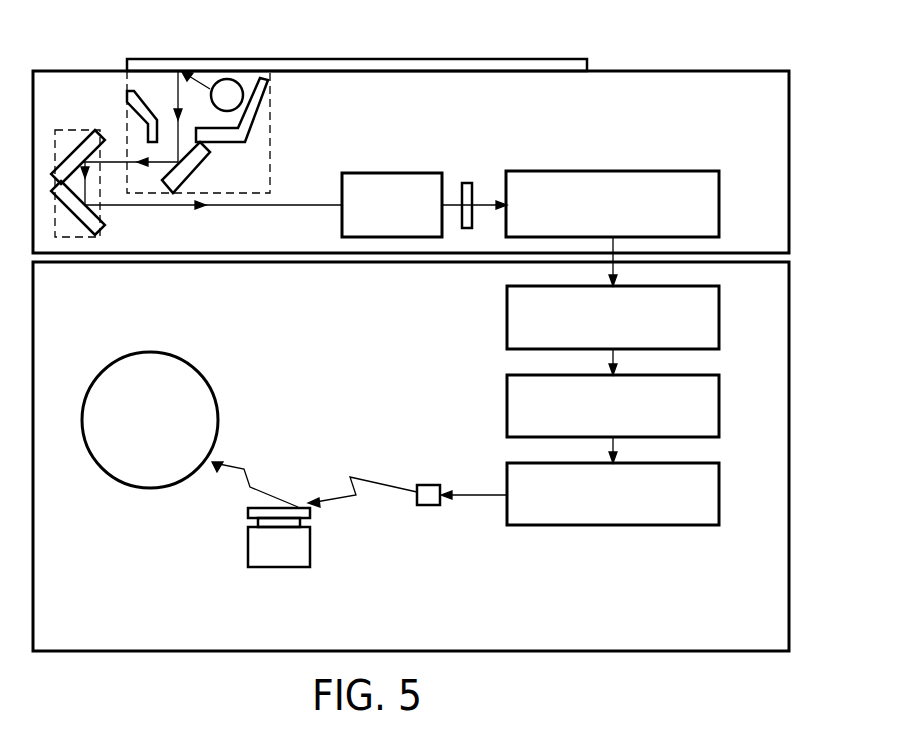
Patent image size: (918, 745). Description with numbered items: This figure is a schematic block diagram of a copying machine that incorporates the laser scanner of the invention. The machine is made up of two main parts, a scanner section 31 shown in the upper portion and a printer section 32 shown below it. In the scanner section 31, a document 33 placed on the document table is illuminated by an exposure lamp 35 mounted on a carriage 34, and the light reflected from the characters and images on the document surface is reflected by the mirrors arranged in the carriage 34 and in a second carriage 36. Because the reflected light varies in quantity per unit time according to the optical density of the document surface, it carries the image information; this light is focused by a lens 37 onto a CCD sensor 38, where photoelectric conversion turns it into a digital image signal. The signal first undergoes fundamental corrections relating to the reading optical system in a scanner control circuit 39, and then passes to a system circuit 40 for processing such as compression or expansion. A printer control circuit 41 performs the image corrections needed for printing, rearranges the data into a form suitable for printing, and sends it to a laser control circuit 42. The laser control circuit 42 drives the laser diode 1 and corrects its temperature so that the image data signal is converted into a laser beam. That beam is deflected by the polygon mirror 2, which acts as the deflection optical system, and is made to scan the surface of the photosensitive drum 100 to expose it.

The laser diode 1 is at (430, 485).
The polygon mirror 2 is at (311, 513).
The scanner section 31 is at (790, 145).
The printer section 32 is at (790, 434).
The document 33 is at (500, 59).
The carriage 34 is at (270, 104).
The exposure lamp 35 is at (228, 79).
The carriage 36 is at (74, 143).
The lens 37 is at (398, 173).
The CCD sensor 38 is at (470, 183).
The scanner control circuit 39 is at (720, 203).
The system circuit 40 is at (720, 313).
The printer control circuit 41 is at (720, 402).
The laser control circuit 42 is at (720, 493).
The photosensitive drum 100 is at (212, 388).